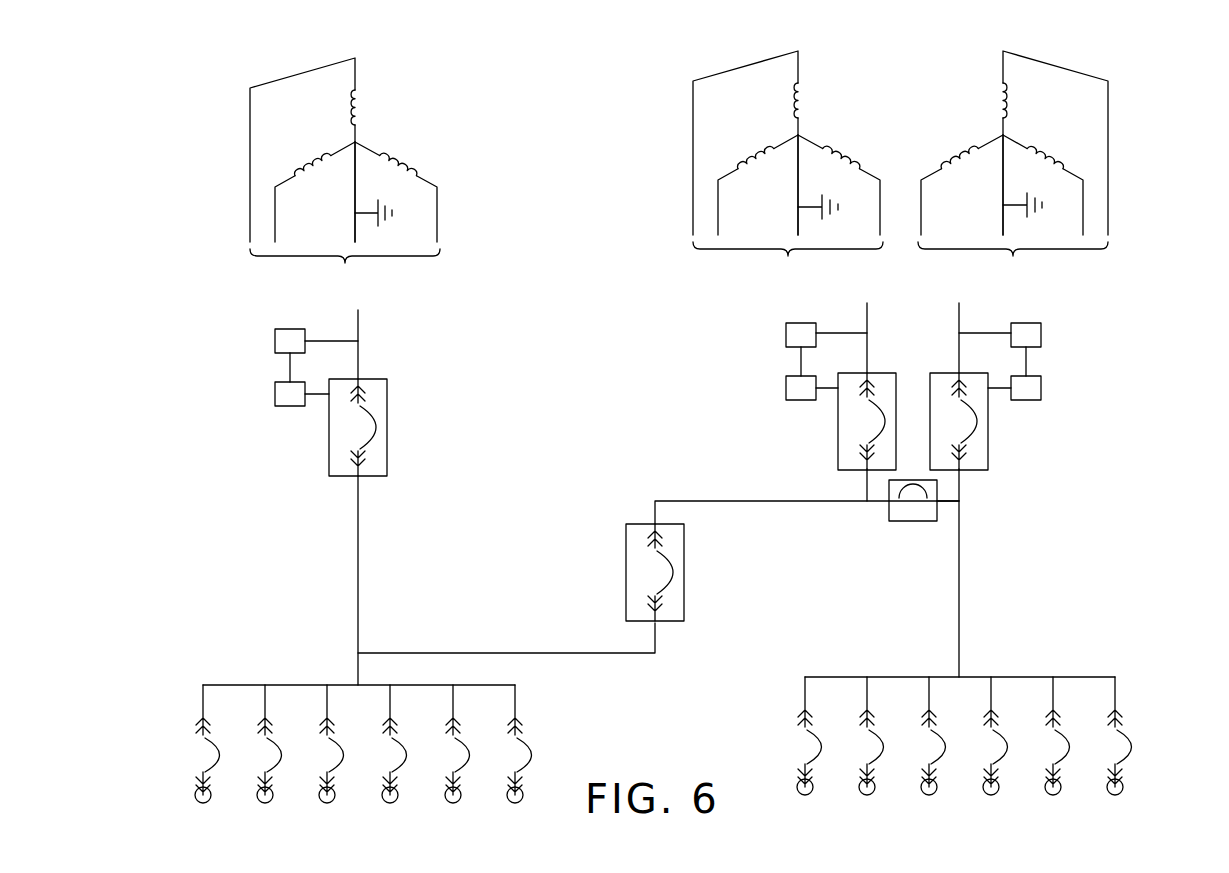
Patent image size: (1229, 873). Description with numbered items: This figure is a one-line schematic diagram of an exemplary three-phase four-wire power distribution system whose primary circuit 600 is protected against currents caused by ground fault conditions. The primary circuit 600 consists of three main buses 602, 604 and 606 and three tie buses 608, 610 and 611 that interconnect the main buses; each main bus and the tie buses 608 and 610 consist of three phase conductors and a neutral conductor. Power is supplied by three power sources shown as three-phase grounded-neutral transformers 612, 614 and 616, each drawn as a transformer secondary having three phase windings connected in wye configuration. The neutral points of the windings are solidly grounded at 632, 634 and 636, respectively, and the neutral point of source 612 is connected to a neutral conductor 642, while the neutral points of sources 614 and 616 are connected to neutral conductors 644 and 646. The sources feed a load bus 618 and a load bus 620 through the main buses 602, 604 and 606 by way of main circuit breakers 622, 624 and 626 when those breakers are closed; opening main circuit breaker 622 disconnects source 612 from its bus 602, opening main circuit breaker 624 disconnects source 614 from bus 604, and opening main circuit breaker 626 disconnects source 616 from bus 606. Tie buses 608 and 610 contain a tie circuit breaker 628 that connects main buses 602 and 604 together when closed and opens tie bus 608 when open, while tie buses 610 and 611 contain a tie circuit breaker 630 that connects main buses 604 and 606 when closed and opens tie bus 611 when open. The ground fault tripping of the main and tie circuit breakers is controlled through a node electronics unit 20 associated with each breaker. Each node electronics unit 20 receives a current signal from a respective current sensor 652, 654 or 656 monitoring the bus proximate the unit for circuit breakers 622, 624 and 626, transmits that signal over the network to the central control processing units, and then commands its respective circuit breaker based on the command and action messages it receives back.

The primary circuit 600 is at (221, 96).
The three-phase grounded-neutral transformer 612 is at (238, 144).
The three-phase grounded-neutral transformer 614 is at (679, 137).
The three-phase grounded-neutral transformer 616 is at (1130, 129).
The neutral conductor 642 is at (355, 196).
The neutral conductor 644 is at (798, 190).
The neutral conductor 646 is at (1003, 187).
The solid ground 632 is at (370, 215).
The solid ground 634 is at (812, 208).
The solid ground 636 is at (1018, 206).
The main bus 602 is at (358, 500).
The main bus 604 is at (867, 492).
The main bus 606 is at (960, 483).
The tie bus 608 is at (437, 653).
The tie bus 610 is at (720, 500).
The tie bus 611 is at (948, 505).
The main circuit breaker 622 is at (388, 428).
The main circuit breaker 624 is at (838, 430).
The main circuit breaker 626 is at (988, 435).
The tie circuit breaker 628 is at (684, 562).
The tie circuit breaker 630 is at (900, 521).
The current sensor 652 is at (275, 341).
The current sensor 654 is at (786, 333).
The current sensor 656 is at (1041, 333).
The node electronics unit 20 is at (275, 394).
The load bus 618 is at (296, 685).
The load bus 620 is at (895, 677).